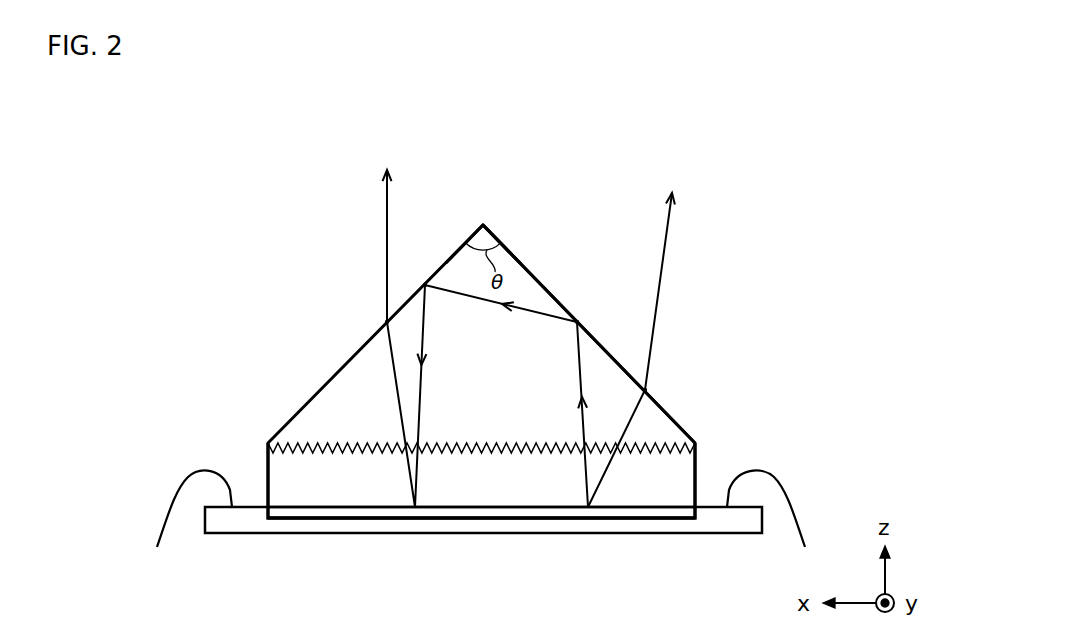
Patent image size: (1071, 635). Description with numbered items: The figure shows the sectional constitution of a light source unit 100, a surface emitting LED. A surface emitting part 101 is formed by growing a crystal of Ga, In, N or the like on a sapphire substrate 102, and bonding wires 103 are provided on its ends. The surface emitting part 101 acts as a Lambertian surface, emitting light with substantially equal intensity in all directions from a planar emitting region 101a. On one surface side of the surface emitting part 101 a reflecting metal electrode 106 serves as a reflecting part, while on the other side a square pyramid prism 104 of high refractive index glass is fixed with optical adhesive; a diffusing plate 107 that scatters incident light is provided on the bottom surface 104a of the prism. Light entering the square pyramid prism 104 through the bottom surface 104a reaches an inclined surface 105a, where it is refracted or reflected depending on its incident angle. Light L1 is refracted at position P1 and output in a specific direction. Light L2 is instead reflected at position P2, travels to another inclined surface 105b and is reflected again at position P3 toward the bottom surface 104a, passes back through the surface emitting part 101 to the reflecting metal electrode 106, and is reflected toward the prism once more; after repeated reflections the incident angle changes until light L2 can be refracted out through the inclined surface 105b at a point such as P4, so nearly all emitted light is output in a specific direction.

The light source unit 100 is at (624, 160).
The surface emitting part 101 is at (312, 497).
The planar emitting region 101a is at (387, 497).
The sapphire substrate 102 is at (683, 475).
The bonding wires 103 is at (173, 492).
The square pyramid prism 104 is at (333, 393).
The bottom surface 104a is at (657, 440).
The inclined surface 105a is at (515, 242).
The inclined surface 105b is at (470, 237).
The reflecting metal electrode 106 is at (550, 511).
The diffusing plate 107 is at (300, 440).
The light L1 is at (664, 255).
The light L2 is at (385, 220).
The position P1 is at (648, 385).
The position P2 is at (578, 320).
The position P3 is at (425, 283).
The point P4 is at (385, 320).